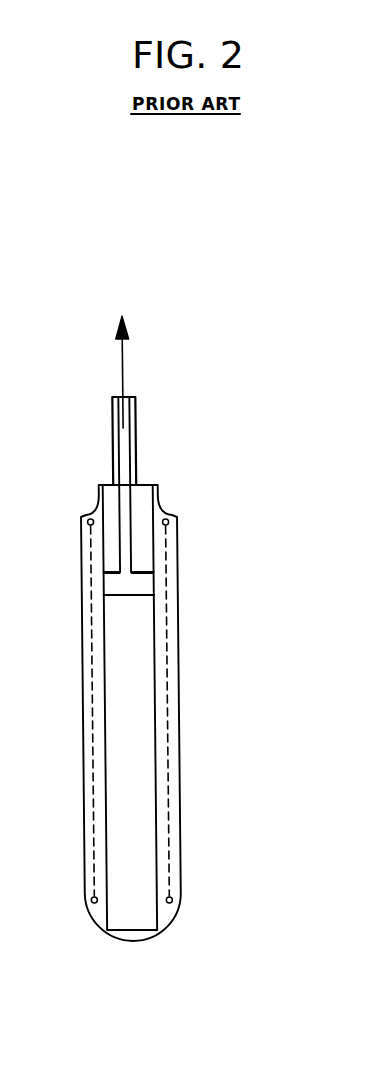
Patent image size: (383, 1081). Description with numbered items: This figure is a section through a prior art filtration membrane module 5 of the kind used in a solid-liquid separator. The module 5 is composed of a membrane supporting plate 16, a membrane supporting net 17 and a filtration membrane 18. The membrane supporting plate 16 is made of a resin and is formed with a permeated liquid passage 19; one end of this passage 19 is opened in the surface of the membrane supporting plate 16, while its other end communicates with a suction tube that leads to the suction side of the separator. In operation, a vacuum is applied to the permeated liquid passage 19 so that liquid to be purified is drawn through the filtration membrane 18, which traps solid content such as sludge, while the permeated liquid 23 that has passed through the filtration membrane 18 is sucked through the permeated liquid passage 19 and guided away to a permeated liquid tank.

The filtration membrane module 5 is at (159, 628).
The membrane supporting plate 16 is at (112, 487).
The membrane supporting net 17 is at (166, 592).
The filtration membrane 18 is at (177, 528).
The permeated liquid passage 19 is at (130, 588).
The permeated liquid 23 is at (125, 366).